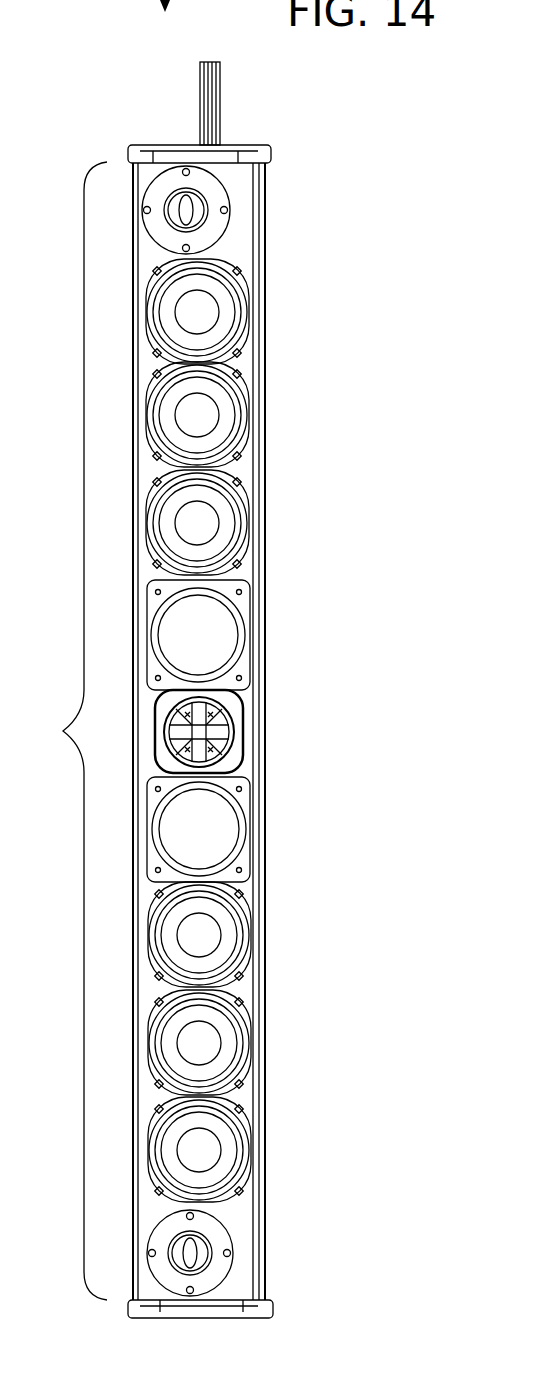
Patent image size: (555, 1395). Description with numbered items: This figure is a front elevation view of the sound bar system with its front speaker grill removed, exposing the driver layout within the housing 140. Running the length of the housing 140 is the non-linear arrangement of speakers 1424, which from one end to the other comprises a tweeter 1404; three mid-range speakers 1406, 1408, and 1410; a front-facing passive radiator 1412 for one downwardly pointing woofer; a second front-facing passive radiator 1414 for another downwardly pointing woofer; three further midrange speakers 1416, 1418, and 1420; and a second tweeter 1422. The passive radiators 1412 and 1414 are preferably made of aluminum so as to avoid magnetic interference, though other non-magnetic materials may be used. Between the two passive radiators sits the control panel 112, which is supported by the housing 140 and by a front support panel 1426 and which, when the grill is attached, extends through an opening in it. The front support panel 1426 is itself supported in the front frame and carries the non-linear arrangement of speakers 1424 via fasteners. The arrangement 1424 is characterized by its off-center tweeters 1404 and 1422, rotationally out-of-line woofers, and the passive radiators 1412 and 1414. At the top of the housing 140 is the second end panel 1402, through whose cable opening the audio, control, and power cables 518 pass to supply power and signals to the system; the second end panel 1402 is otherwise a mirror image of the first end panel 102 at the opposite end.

The first end panel 102 is at (252, 1305).
The control panel 112 is at (230, 753).
The housing 140 is at (262, 244).
The cables 518 is at (200, 75).
The second end panel 1402 is at (175, 143).
The tweeter 1404 is at (210, 190).
The mid-range speaker 1406 is at (233, 316).
The mid-range speaker 1408 is at (201, 413).
The mid-range speaker 1410 is at (200, 523).
The front-facing passive radiator 1412 is at (204, 622).
The front-facing passive radiator 1414 is at (230, 808).
The midrange speaker 1416 is at (218, 935).
The midrange speaker 1418 is at (227, 1050).
The midrange speaker 1420 is at (217, 1150).
The tweeter 1422 is at (208, 1275).
The non-linear arrangement of speakers 1424 is at (0, 731).
The front support panel 1426 is at (242, 700).